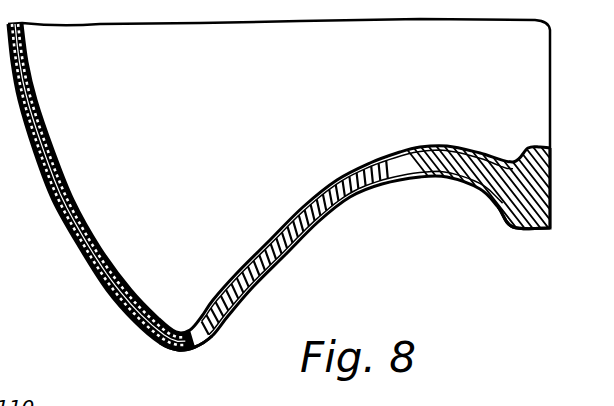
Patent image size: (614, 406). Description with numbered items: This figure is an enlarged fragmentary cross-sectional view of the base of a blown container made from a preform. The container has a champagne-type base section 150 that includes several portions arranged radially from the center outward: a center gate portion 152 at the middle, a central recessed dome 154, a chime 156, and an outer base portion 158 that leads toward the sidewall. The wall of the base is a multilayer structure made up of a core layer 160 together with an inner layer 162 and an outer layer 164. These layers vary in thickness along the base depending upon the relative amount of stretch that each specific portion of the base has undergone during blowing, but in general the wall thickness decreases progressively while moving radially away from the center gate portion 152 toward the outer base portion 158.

The champagne-type base section 150 is at (460, 197).
The center gate portion 152 is at (530, 231).
The central recessed dome 154 is at (343, 208).
The chime 156 is at (182, 351).
The outer base portion 158 is at (107, 286).
The core layer 160 is at (441, 146).
The inner layer 162 is at (405, 146).
The outer layer 164 is at (417, 181).